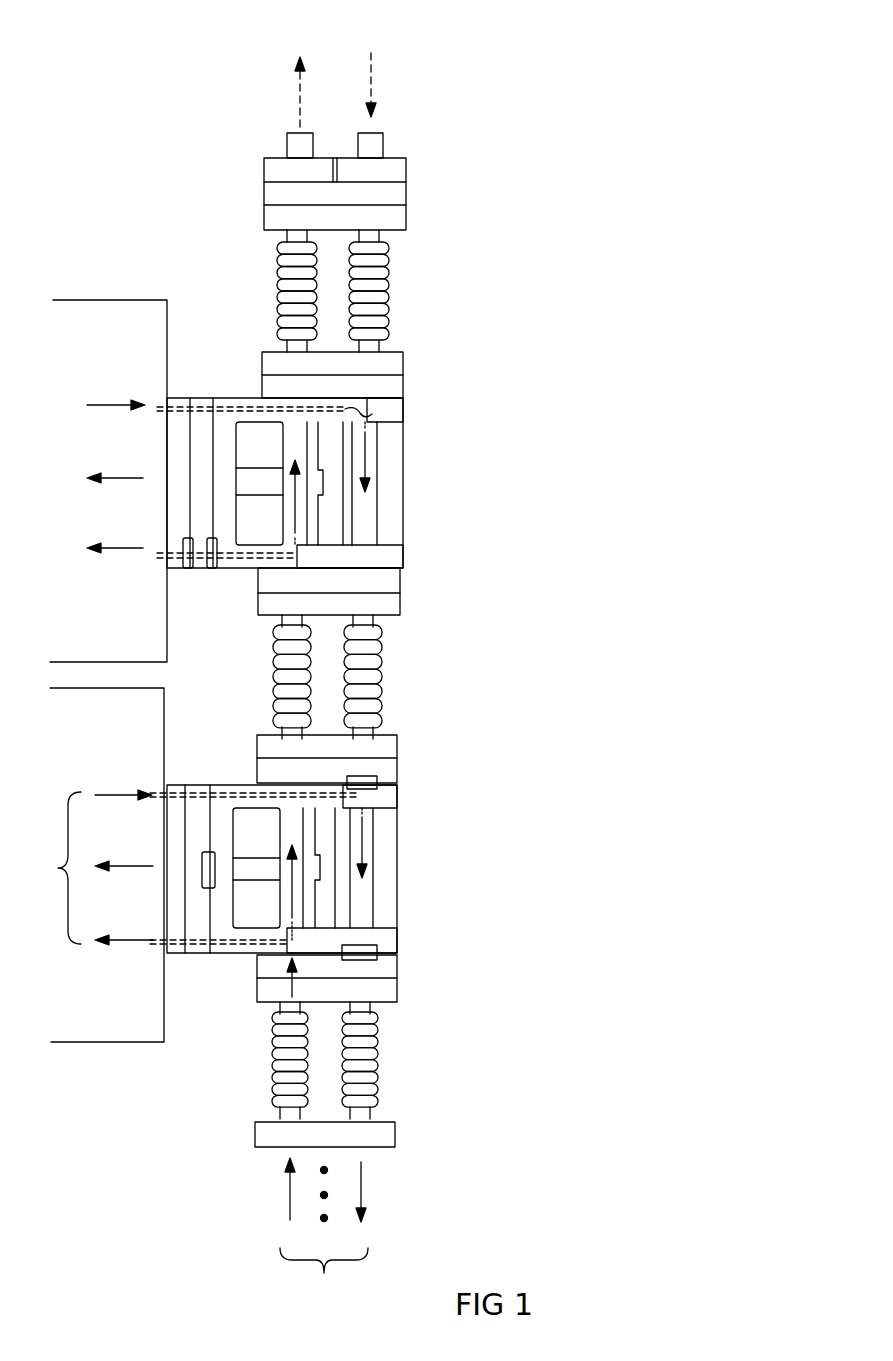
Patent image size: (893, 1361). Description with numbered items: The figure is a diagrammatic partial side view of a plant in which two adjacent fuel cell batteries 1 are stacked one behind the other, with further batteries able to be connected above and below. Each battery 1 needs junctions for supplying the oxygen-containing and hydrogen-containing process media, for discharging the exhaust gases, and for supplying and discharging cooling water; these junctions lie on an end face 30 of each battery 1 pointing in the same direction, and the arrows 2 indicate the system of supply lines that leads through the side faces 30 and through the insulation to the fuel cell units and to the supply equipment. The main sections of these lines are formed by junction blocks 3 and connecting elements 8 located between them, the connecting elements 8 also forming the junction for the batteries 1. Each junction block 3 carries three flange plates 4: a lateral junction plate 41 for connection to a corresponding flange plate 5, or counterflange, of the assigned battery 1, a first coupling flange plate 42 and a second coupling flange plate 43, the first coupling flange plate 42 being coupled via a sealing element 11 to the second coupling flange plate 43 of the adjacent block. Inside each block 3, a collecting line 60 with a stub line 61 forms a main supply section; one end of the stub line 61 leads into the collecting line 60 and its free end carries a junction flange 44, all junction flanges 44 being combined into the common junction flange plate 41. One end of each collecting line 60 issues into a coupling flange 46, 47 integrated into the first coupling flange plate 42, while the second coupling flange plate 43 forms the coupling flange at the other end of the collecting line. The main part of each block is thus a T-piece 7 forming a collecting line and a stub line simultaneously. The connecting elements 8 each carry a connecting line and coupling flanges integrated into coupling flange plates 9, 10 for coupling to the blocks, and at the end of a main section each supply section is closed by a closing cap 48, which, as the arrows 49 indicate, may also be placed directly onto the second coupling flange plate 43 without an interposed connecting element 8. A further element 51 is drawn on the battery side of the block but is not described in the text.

The fuel cell battery 1 is at (95, 336).
The arrows indicating supply lines 2 is at (41, 883).
The junction block 3 is at (410, 478).
The flange plate 4 is at (380, 800).
The flange plate of the battery 5 is at (176, 432).
The T-piece 7 is at (328, 902).
The connecting element 8 is at (378, 286).
The coupling flange plate of the connecting element 9 is at (385, 216).
The coupling flange plate of the connecting element 10 is at (378, 362).
The sealing element 11 is at (390, 185).
The end face 30 is at (163, 638).
The lateral junction plate 41 is at (215, 447).
The first coupling flange plate 42 is at (340, 558).
The second coupling flange plate 43 is at (405, 411).
The junction flange 44 is at (210, 850).
The coupling flange 46 is at (380, 947).
The coupling flange 47 is at (378, 777).
The closing cap 48 is at (375, 140).
The arrows 49 is at (372, 78).
The seal 51 is at (190, 566).
The collecting line 60 is at (368, 845).
The stub line 61 is at (253, 868).